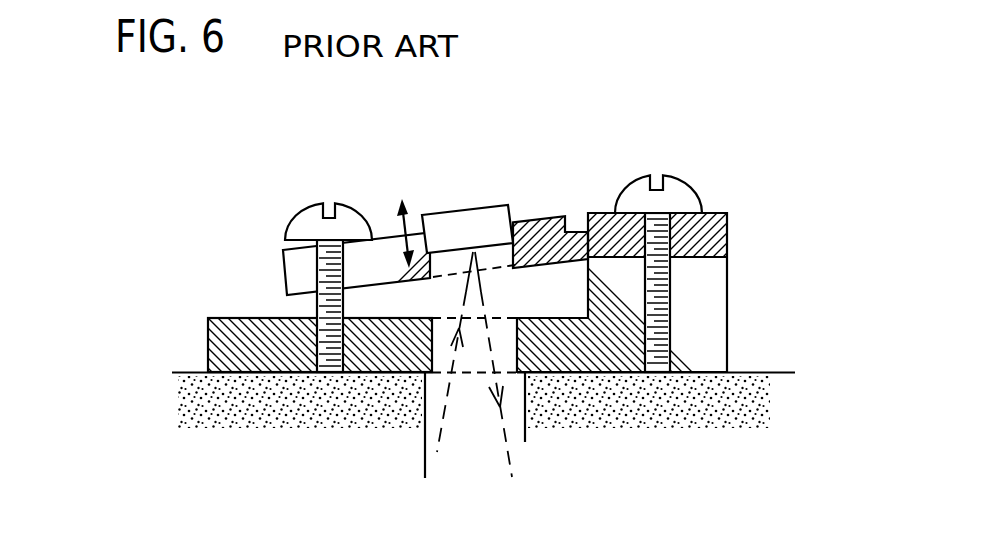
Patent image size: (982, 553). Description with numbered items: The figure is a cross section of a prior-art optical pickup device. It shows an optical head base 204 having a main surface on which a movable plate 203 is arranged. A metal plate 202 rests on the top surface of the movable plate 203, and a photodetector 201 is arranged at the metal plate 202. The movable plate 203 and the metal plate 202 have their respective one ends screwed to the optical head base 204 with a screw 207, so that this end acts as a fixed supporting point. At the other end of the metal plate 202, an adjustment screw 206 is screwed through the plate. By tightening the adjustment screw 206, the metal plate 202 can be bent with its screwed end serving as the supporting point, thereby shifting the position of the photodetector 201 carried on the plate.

The photodetector 201 is at (467, 207).
The metal plate 202 is at (534, 212).
The movable plate 203 is at (710, 288).
The optical head base 204 is at (197, 403).
The adjustment screw 206 is at (295, 220).
The screw 207 is at (701, 211).